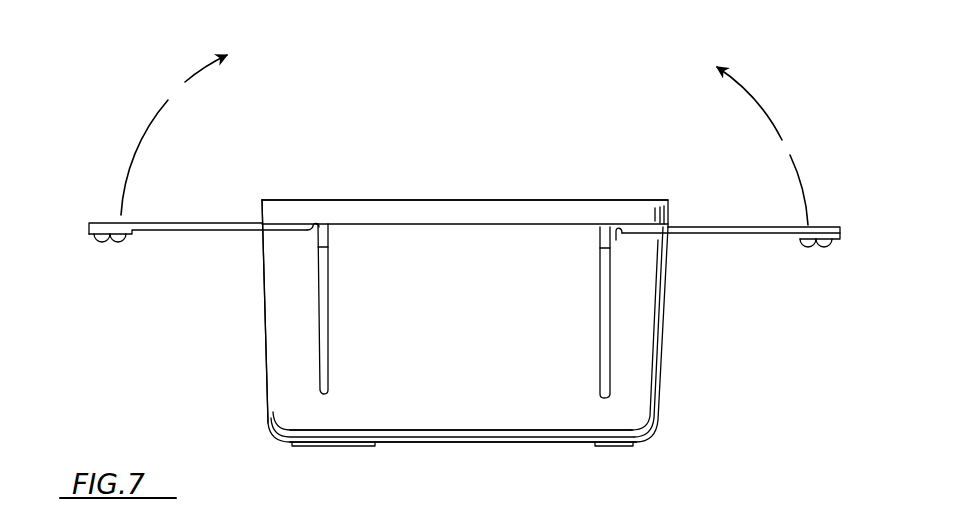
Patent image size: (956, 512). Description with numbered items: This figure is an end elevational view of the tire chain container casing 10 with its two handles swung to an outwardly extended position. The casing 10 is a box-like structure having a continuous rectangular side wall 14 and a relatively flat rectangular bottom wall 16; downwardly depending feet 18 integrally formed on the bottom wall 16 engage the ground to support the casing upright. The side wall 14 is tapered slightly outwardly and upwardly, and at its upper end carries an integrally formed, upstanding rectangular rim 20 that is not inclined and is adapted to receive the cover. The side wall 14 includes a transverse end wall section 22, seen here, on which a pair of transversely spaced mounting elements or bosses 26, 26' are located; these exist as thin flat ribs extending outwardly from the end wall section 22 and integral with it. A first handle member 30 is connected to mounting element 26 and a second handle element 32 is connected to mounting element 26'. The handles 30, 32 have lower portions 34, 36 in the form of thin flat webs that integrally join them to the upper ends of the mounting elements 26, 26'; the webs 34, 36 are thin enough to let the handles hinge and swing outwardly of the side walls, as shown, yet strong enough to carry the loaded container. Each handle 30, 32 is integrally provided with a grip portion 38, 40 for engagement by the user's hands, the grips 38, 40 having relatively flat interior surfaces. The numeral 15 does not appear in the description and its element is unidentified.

The container casing 10 is at (495, 170).
The side wall 14 is at (662, 317).
The side wall 15 is at (263, 318).
The bottom wall 16 is at (507, 443).
The feet 18 is at (343, 448).
The rim 20 is at (423, 205).
The end wall section 22 is at (437, 408).
The mounting element 26 is at (578, 312).
The mounting element 26' is at (351, 309).
The first handle member 30 is at (760, 225).
The second handle element 32 is at (200, 212).
The lower portion 34 is at (616, 240).
The lower portion 36 is at (312, 234).
The grip portion 38 is at (819, 242).
The grip portion 40 is at (113, 237).